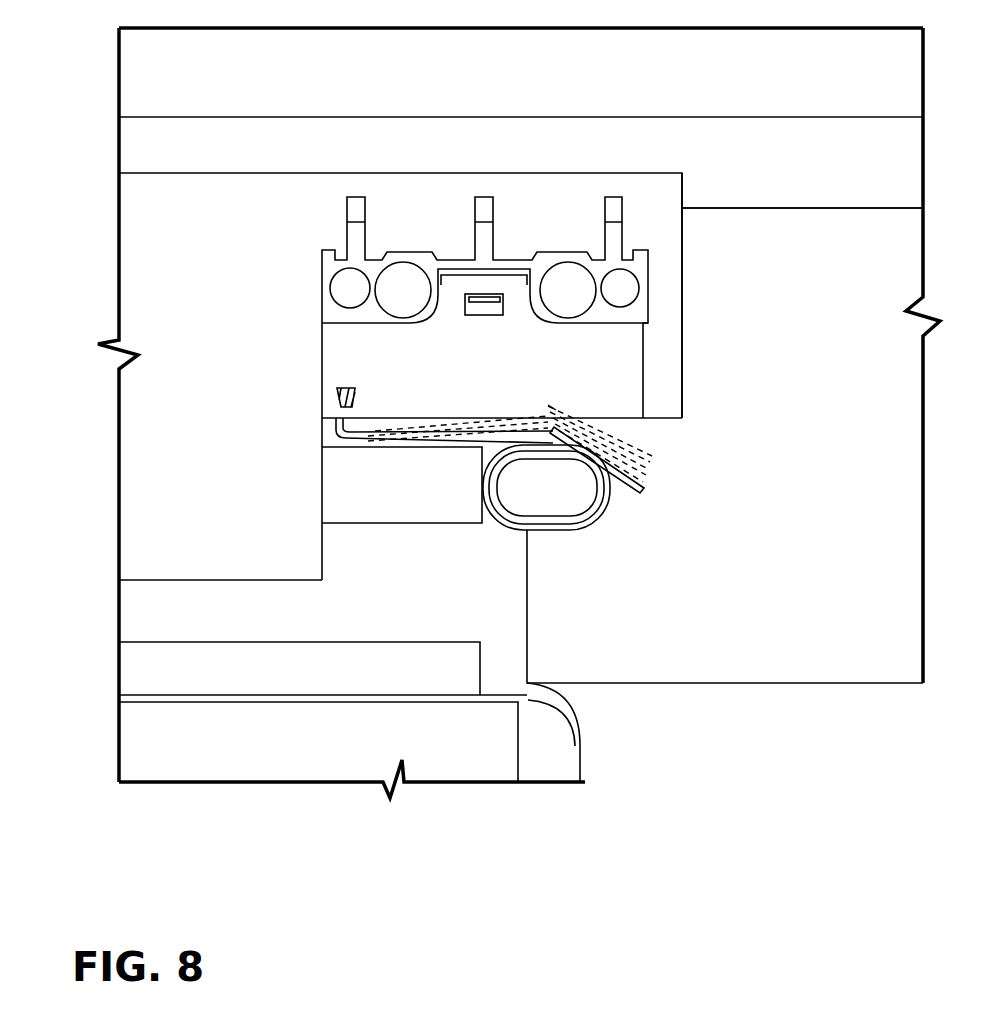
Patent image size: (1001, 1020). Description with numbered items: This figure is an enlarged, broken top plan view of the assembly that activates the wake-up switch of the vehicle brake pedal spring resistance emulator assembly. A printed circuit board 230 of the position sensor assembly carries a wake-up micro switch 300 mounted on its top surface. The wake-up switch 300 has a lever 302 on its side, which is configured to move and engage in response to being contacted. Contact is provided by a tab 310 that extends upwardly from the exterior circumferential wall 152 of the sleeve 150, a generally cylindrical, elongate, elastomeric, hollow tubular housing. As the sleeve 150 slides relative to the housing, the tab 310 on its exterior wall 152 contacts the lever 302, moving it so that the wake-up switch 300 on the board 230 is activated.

The printed circuit board 230 is at (222, 246).
The wake-up micro switch 300 is at (352, 360).
The lever 302 is at (622, 495).
The tab 310 is at (545, 497).
The sleeve 150 is at (752, 582).
The exterior circumferential wall 152 is at (802, 764).